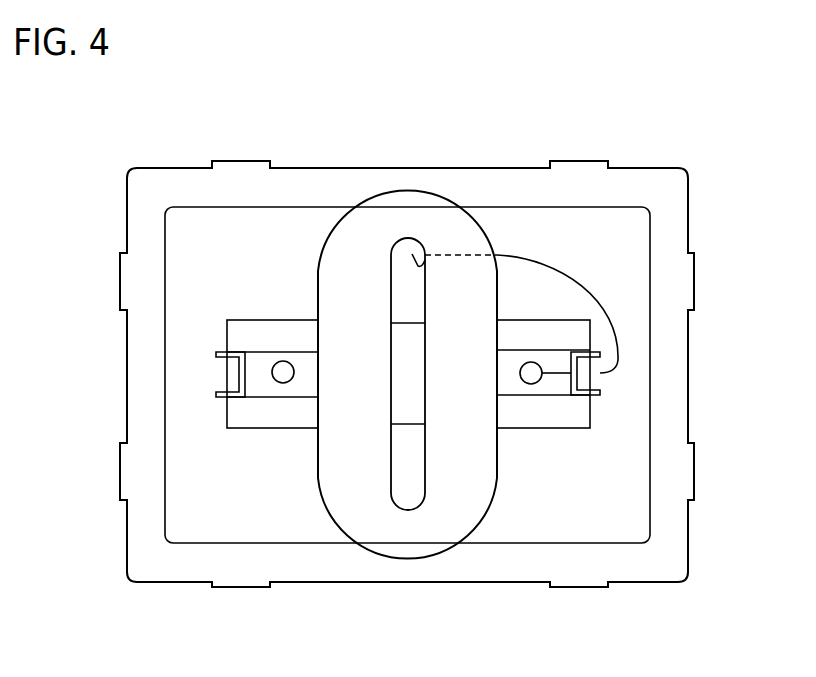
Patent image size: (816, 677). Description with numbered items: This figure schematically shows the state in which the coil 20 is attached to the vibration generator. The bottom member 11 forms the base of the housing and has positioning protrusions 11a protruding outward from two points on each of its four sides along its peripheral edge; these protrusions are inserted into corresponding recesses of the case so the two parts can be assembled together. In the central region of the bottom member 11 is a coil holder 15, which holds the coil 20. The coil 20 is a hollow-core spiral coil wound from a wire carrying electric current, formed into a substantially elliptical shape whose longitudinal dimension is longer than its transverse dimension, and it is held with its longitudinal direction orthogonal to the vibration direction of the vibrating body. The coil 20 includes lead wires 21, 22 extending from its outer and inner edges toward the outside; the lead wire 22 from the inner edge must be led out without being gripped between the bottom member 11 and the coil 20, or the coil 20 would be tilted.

The bottom member 11 is at (648, 184).
The positioning protrusions 11a is at (248, 161).
The coil holder 15 is at (533, 428).
The coil 20 is at (408, 183).
The lead wire 21 is at (293, 381).
The lead wire 22 is at (528, 256).